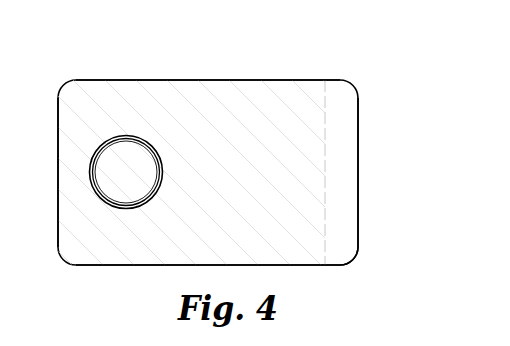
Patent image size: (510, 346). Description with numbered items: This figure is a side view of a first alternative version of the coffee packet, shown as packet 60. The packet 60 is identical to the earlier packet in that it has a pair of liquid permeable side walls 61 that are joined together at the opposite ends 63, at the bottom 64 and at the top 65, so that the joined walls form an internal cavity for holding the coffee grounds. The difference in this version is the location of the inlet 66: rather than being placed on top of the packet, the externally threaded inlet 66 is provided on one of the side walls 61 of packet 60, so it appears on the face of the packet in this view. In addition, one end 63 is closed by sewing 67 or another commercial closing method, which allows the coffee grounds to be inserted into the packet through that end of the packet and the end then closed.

The packet 60 is at (277, 80).
The liquid permeable side walls 61 is at (173, 98).
The opposite ends 63 is at (57, 180).
The bottom 64 is at (144, 268).
The top 65 is at (227, 80).
The externally threaded inlet 66 is at (101, 200).
The sewing 67 is at (342, 262).